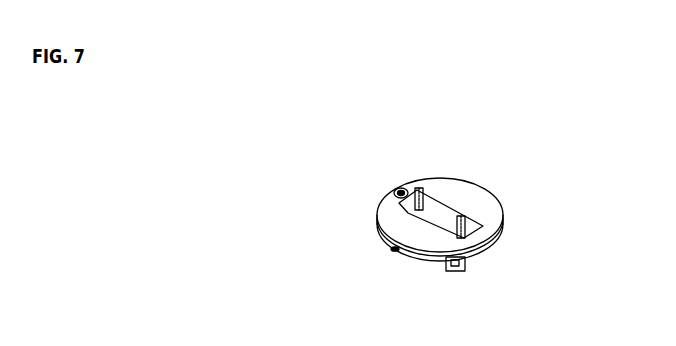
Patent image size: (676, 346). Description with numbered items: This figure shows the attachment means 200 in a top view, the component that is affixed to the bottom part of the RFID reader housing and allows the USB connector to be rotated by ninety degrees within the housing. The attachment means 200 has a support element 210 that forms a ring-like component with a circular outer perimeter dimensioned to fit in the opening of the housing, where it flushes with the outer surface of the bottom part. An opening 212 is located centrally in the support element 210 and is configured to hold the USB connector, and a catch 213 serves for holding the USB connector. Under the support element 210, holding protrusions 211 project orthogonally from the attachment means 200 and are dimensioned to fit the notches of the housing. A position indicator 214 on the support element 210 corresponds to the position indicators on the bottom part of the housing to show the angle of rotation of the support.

The attachment means 200 is at (321, 252).
The support element 210 is at (487, 216).
The holding protrusions 211 is at (450, 272).
The opening 212 is at (439, 205).
The catch 213 is at (458, 224).
The position indicator 214 is at (398, 191).